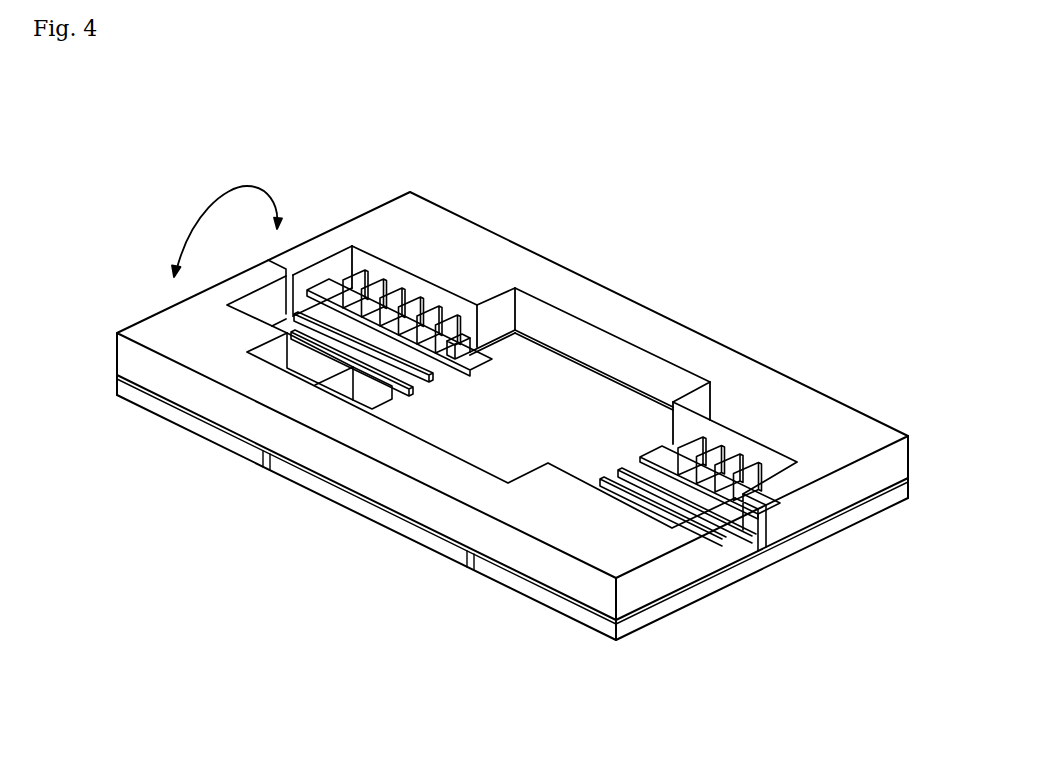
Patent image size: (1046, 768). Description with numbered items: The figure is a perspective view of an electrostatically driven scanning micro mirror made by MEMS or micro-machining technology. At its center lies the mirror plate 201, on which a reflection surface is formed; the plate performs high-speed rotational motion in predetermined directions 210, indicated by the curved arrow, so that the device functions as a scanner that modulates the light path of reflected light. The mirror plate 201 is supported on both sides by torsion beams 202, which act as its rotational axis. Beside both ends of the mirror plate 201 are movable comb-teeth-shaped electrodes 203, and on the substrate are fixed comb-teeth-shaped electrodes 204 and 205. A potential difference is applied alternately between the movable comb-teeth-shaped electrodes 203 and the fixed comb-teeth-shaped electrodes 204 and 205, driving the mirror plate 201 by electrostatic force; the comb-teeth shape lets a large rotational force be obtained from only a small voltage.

The mirror plate 201 is at (566, 392).
The torsion beams 202 is at (625, 468).
The movable comb-teeth-shaped electrodes 203 is at (460, 338).
The fixed comb-teeth-shaped electrodes 204 is at (430, 307).
The fixed comb-teeth-shaped electrodes 205 is at (292, 336).
The predetermined directions 210 is at (227, 209).